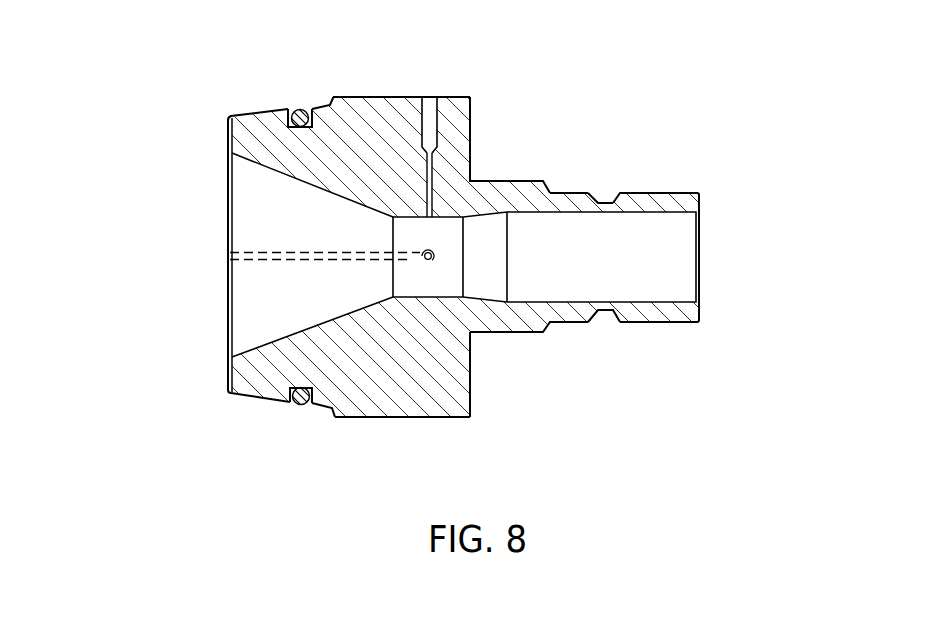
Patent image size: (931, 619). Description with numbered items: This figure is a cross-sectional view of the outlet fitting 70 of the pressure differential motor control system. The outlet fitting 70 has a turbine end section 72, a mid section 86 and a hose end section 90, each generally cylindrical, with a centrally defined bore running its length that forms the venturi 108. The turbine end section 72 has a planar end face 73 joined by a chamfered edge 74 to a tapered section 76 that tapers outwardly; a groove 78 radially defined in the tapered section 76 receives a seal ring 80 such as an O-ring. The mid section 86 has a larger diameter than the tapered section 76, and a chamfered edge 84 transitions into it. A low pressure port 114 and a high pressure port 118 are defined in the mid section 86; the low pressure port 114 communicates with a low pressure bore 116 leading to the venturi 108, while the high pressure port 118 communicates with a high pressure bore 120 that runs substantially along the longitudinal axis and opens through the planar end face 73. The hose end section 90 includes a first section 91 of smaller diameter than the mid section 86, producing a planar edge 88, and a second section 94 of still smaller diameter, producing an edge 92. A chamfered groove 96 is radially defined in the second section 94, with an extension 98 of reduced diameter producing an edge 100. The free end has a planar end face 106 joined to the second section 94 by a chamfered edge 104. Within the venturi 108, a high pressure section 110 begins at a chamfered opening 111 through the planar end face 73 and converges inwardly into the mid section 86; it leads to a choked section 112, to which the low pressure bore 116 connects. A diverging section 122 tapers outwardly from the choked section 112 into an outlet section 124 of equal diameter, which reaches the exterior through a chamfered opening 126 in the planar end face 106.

The outlet fitting 70 is at (165, 73).
The turbine end section 72 is at (228, 137).
The planar end face 73 is at (228, 373).
The chamfered edge 74 is at (227, 395).
The tapered section 76 is at (270, 402).
The groove 78 is at (312, 388).
The seal ring 80 is at (293, 108).
The chamfered edge 84 is at (330, 100).
The mid section 86 is at (380, 417).
The planar edge 88 is at (472, 403).
The hose end section 90 is at (673, 192).
The first section 91 is at (495, 181).
The edge 92 is at (548, 323).
The second section 94 is at (578, 192).
The chamfered groove 96 is at (603, 203).
The extension 98 is at (620, 193).
The edge 100 is at (622, 322).
The chamfered edge 104 is at (700, 322).
The planar end face 106 is at (700, 203).
The venturi 108 is at (243, 190).
The high pressure section 110 is at (315, 232).
The chamfered opening 111 is at (230, 308).
The choked section 112 is at (413, 273).
The low pressure port 114 is at (430, 103).
The low pressure bore 116 is at (423, 185).
The high pressure port 118 is at (428, 262).
The high pressure bore 120 is at (252, 254).
The diverging section 122 is at (487, 260).
The outlet section 124 is at (653, 268).
The chamfered opening 126 is at (699, 240).